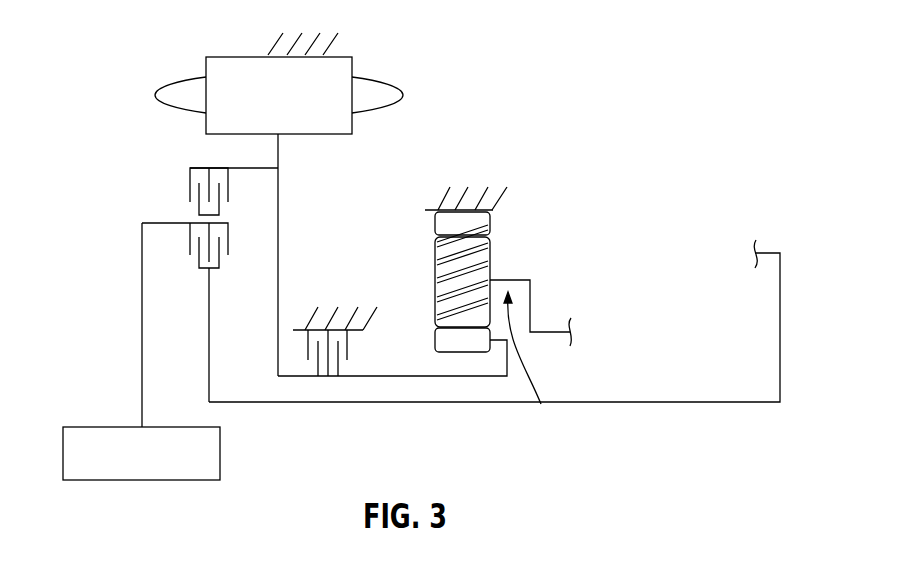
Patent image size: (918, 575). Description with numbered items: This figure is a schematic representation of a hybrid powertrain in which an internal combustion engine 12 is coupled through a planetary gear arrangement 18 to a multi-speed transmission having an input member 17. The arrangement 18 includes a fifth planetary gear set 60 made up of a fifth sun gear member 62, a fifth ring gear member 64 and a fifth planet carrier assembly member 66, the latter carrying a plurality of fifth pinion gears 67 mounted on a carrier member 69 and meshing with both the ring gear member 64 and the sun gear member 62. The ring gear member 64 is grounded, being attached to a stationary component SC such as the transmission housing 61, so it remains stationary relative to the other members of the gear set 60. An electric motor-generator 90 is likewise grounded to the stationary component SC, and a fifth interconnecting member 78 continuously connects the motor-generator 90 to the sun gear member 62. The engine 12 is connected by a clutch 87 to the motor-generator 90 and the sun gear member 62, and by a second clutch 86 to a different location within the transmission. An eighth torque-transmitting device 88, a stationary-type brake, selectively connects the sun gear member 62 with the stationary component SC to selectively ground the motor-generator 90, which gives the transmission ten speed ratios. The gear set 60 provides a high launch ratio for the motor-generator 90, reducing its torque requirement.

The internal combustion engine 12 is at (122, 481).
The input member 17 is at (277, 403).
The planetary gear arrangement 18 is at (536, 53).
The fifth planetary gear set 60 is at (447, 195).
The transmission housing 61 is at (337, 35).
The fifth sun gear member 62 is at (453, 342).
The fifth ring gear member 64 is at (435, 222).
The fifth planet carrier assembly member 66 is at (528, 373).
The fifth pinion gears 67 is at (435, 277).
The carrier member 69 is at (510, 279).
The fifth interconnecting member 78 is at (410, 377).
The clutch 86 is at (188, 235).
The clutch 87 is at (188, 188).
The eighth torque-transmitting device 88 is at (348, 340).
The electric motor-generator 90 is at (240, 55).
The stationary component SC is at (310, 315).